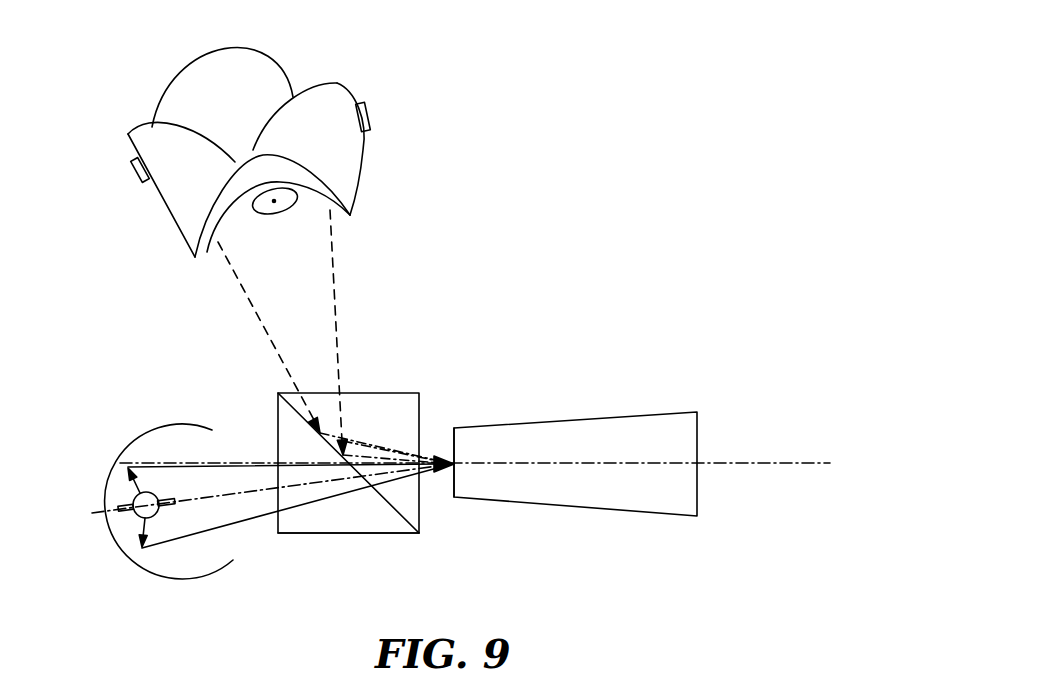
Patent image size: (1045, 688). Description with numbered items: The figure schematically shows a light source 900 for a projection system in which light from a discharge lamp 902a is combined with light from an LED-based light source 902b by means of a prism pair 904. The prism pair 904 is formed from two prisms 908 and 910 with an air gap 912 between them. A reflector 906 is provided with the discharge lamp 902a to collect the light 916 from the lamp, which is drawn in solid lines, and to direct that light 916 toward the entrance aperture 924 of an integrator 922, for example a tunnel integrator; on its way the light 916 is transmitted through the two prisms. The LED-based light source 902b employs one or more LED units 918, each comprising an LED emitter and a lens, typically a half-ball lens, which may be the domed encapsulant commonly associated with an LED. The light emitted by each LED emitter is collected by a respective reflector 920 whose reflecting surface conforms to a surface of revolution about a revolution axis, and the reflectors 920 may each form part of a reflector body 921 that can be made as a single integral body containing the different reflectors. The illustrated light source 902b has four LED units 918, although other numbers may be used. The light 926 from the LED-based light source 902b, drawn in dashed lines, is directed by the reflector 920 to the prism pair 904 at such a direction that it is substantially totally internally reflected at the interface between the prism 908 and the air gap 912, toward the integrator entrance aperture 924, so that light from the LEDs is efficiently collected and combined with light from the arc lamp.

The light source 900 is at (500, 140).
The discharge lamp 902a is at (137, 528).
The LED-based light source 902b is at (372, 87).
The prism pair 904 is at (293, 393).
The reflector 906 is at (113, 487).
The prism 908 is at (378, 535).
The prism 910 is at (419, 402).
The air gap 912 is at (277, 388).
The light from the lamp 916 is at (245, 523).
The LED unit 918 is at (130, 168).
The reflector 920 is at (127, 138).
The reflector body 921 is at (262, 82).
The integrator 922 is at (595, 420).
The entrance aperture 924 is at (447, 494).
The light from the LED-based light source 926 is at (336, 322).